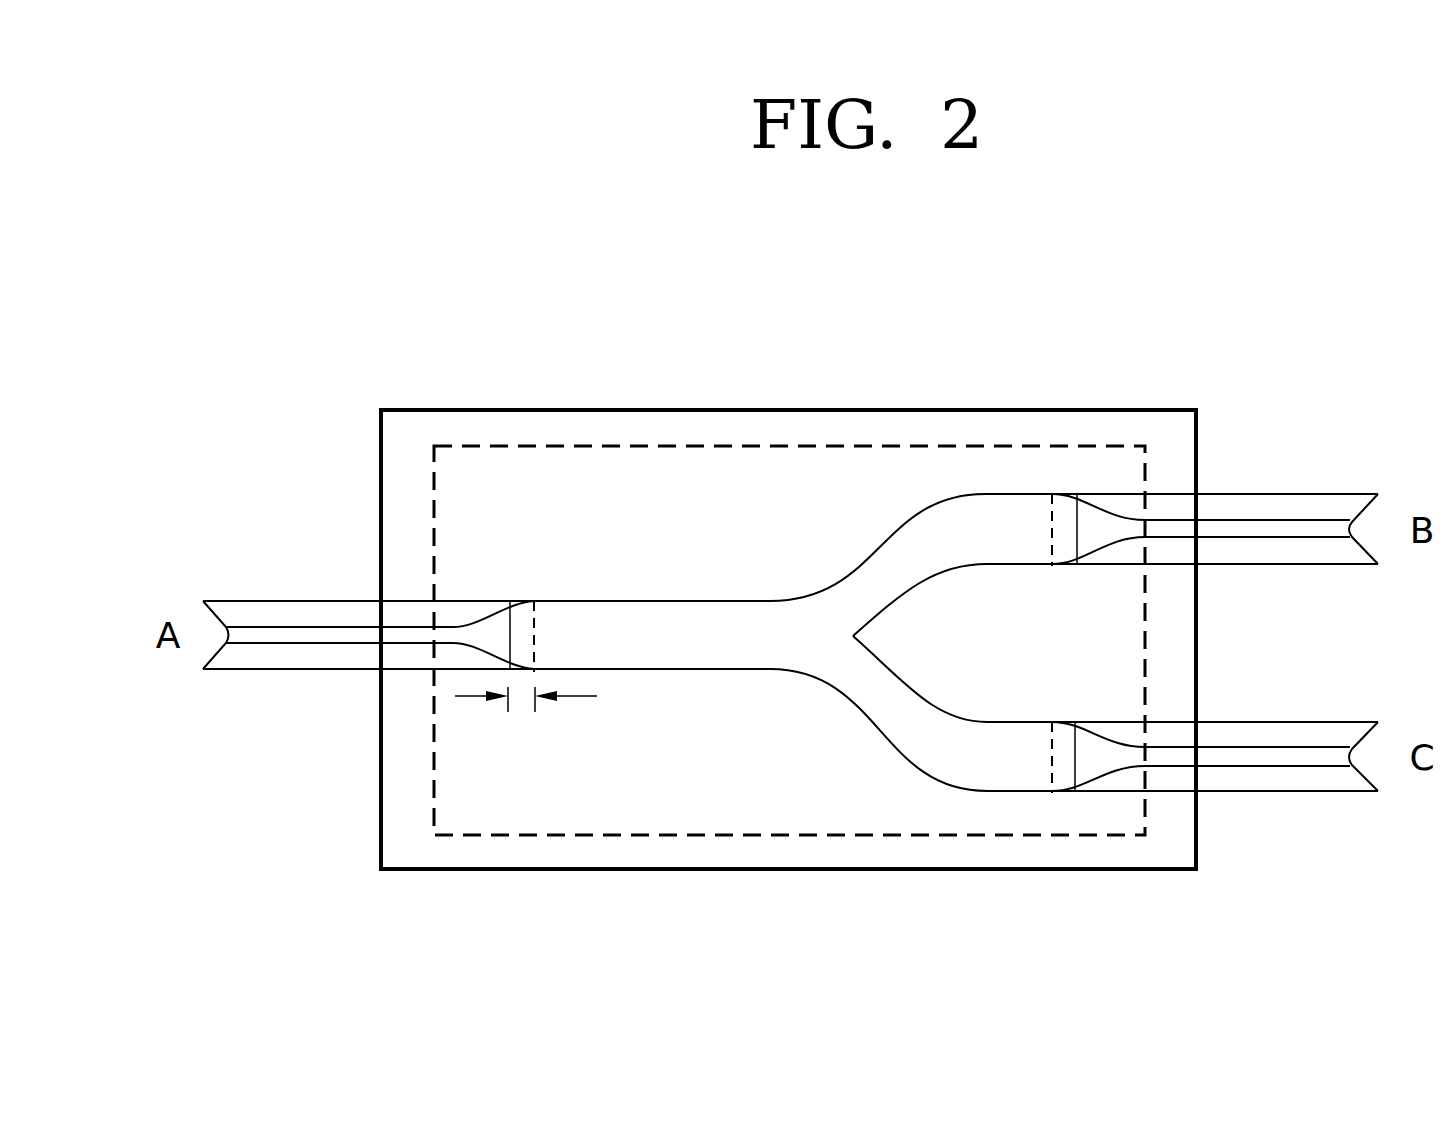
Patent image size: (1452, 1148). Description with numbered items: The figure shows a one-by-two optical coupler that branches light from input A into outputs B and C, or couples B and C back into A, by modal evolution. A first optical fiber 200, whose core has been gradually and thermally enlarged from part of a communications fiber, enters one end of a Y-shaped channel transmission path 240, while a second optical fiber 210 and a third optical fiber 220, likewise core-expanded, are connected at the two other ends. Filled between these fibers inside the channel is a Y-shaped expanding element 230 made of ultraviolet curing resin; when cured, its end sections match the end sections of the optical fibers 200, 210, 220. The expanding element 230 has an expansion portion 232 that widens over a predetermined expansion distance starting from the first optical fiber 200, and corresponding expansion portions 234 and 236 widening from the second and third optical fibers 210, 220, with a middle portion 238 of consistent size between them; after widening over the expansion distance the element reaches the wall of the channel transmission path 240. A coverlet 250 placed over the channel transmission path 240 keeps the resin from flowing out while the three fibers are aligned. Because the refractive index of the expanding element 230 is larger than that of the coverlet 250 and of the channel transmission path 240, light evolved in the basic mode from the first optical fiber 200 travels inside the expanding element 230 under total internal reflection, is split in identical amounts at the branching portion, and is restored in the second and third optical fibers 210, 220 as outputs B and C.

The first optical fiber 200 is at (310, 612).
The second optical fiber 210 is at (1272, 493).
The third optical fiber 220 is at (1268, 793).
The expanding element 230 is at (512, 383).
The expansion portion 232 is at (527, 618).
The expansion portion 234 is at (1056, 548).
The expansion portion 236 is at (1052, 790).
The middle portion 238 is at (692, 618).
The channel transmission path 240 is at (408, 426).
The coverlet 250 is at (1113, 458).